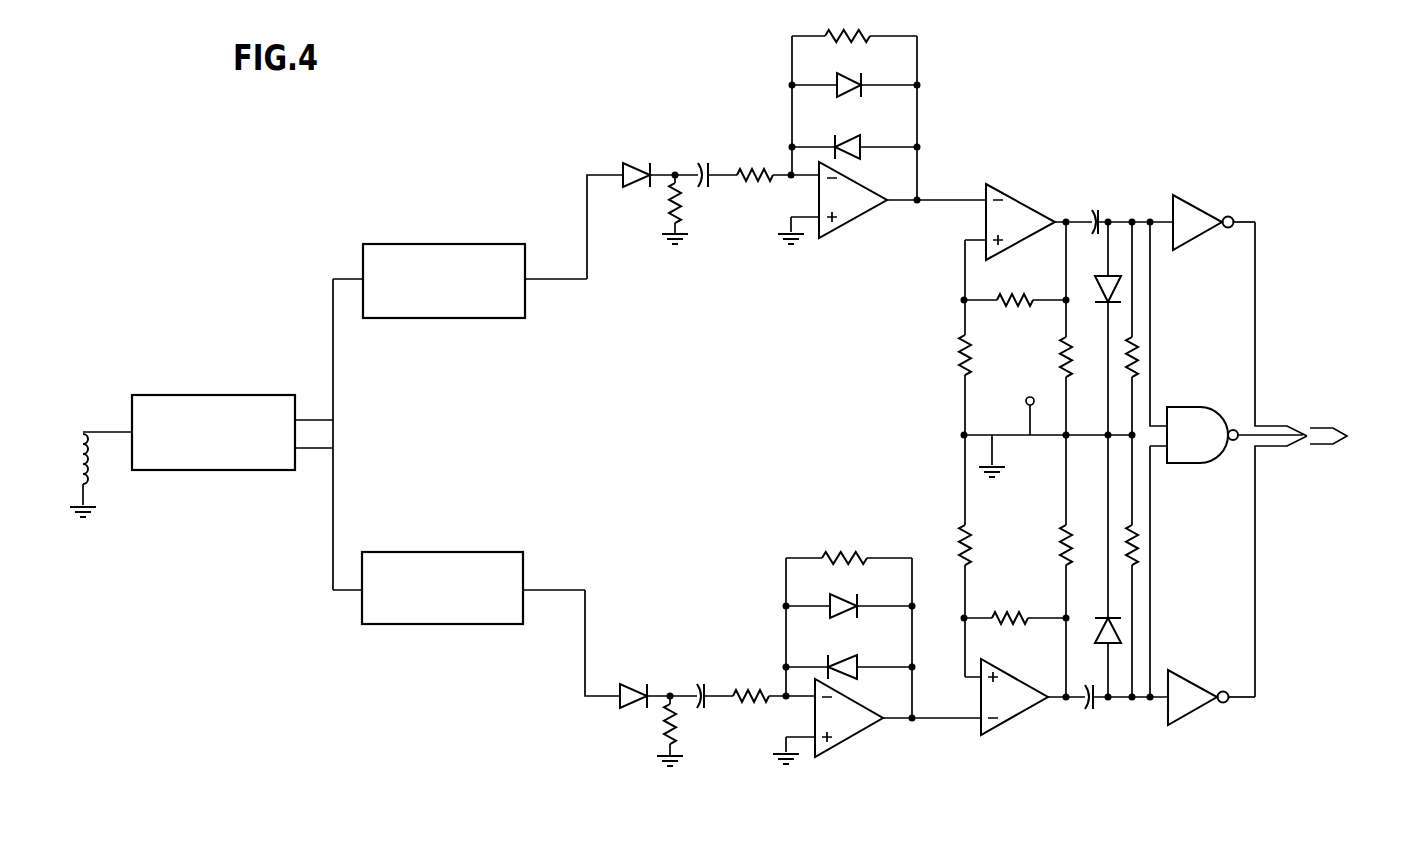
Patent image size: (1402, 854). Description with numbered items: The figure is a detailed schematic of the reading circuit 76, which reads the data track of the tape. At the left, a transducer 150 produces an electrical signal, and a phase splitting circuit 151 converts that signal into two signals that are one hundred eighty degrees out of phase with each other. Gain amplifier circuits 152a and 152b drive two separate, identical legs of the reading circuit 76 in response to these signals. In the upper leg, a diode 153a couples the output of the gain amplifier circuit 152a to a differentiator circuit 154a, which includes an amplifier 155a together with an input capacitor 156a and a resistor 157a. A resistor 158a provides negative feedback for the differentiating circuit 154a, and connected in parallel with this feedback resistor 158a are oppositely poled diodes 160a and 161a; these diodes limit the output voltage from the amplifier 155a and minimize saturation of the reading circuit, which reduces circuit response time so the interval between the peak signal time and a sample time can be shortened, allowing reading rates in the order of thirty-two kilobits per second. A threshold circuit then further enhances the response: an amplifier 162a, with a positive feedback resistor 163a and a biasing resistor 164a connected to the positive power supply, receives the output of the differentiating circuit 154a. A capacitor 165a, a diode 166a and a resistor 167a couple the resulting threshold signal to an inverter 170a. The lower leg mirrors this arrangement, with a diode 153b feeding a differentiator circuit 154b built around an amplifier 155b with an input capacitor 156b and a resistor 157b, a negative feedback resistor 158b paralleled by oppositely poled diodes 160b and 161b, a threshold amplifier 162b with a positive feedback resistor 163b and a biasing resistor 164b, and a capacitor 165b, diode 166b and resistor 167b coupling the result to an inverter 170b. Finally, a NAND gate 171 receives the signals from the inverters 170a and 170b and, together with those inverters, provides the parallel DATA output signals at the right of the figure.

The reading circuit 76 is at (717, 408).
The transducer 150 is at (83, 432).
The phase splitting circuit 151 is at (188, 395).
The gain amplifier circuit 152a is at (417, 244).
The gain amplifier circuit 152b is at (440, 552).
The diode 153a is at (645, 143).
The diode 153b is at (636, 683).
The differentiator circuit 154a is at (824, 167).
The differentiator circuit 154b is at (822, 652).
The amplifier 155a is at (847, 224).
The amplifier 155b is at (817, 755).
The input capacitor 156a is at (692, 169).
The input capacitor 156b is at (699, 654).
The resistor 157a is at (764, 181).
The resistor 157b is at (758, 686).
The feedback resistor 158a is at (862, 40).
The feedback resistor 158b is at (859, 553).
The diode 160a is at (861, 155).
The diode 160b is at (846, 655).
The diode 161a is at (852, 97).
The diode 161b is at (848, 600).
The amplifier 162a is at (1012, 199).
The amplifier 162b is at (986, 731).
The positive feedback resistor 163a is at (1032, 294).
The positive feedback resistor 163b is at (1020, 590).
The biasing resistor 164a is at (1058, 345).
The biasing resistor 164b is at (1061, 542).
The capacitor 165a is at (1088, 211).
The capacitor 165b is at (1089, 714).
The diode 166a is at (1109, 276).
The diode 166b is at (1104, 610).
The resistor 167a is at (1141, 352).
The resistor 167b is at (1136, 553).
The inverter 170a is at (1198, 208).
The inverter 170b is at (1192, 680).
The NAND gate 171 is at (1187, 405).